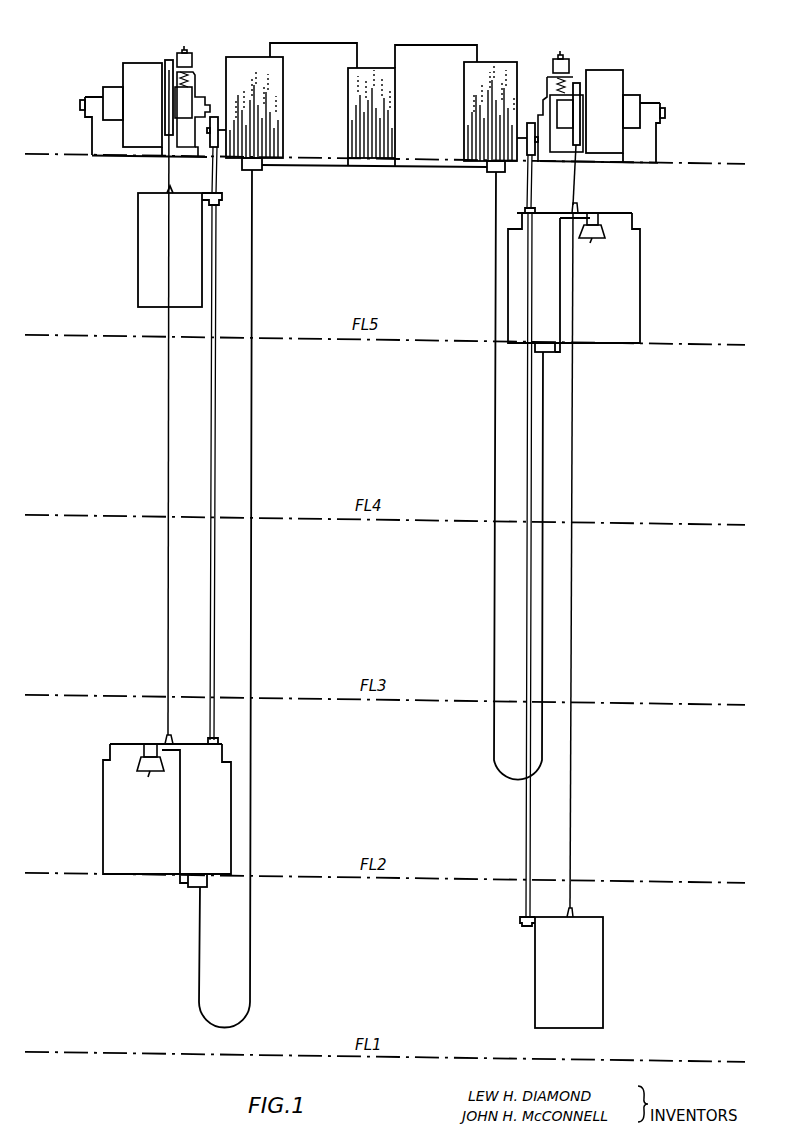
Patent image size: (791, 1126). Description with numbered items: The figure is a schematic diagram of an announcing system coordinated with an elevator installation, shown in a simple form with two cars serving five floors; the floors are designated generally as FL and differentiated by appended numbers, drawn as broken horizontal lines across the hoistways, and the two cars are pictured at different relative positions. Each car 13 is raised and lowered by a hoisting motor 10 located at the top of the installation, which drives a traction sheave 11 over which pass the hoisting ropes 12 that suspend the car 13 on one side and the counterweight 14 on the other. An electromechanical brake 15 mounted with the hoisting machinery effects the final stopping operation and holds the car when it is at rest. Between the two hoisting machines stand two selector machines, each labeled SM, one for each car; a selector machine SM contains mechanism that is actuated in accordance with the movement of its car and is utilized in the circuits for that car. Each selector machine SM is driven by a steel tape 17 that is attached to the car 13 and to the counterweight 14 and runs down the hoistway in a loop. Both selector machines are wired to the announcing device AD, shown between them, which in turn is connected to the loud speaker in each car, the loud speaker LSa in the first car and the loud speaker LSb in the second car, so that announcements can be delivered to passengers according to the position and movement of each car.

The hoisting motor 10 is at (123, 75).
The traction sheave 11 is at (168, 80).
The hoisting ropes 12 is at (169, 171).
The car 13 is at (368, 547).
The counterweight 14 is at (138, 244).
The electromechanical brake 15 is at (190, 56).
The steel tape 17 is at (216, 388).
The selector machine SM is at (245, 57).
The announcing device AD is at (367, 67).
The loud speaker LSa is at (150, 768).
The loud speaker LSb is at (591, 236).